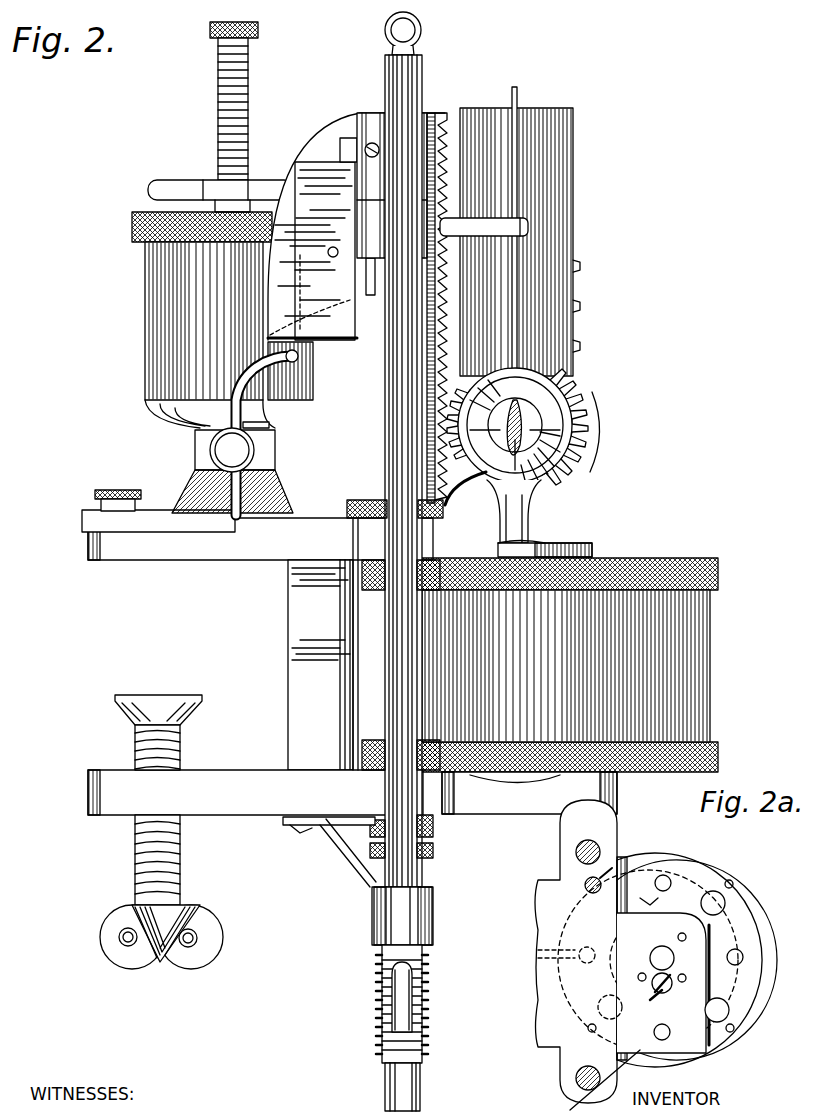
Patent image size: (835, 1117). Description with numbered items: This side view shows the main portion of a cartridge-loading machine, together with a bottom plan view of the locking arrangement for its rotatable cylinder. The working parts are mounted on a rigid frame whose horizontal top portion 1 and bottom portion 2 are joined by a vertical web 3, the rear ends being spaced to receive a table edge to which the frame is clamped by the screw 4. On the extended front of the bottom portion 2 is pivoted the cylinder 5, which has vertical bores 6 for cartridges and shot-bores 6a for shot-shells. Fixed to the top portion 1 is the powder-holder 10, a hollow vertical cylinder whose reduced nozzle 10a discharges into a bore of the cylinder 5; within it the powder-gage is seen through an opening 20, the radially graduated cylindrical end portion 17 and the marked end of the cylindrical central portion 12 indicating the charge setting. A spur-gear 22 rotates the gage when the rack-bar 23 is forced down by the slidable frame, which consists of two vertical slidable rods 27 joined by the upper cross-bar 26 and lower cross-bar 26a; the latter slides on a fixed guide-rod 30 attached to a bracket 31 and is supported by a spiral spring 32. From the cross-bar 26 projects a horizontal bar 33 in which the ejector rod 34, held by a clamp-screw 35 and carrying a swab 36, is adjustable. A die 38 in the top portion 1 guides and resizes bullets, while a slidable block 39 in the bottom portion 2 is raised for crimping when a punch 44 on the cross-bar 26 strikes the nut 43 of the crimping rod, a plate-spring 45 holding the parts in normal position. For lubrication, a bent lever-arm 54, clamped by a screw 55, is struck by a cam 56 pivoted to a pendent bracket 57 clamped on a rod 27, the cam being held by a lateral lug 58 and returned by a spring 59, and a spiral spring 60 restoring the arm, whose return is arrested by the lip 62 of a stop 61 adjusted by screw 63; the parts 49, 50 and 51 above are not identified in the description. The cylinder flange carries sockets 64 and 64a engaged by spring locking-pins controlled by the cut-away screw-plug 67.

In FIG. 2, the horizontal top portion 1 is at (257, 535).
In FIG. 2, the bottom portion 2 is at (255, 792).
In FIG. 2A, the bottom portion 2 is at (545, 975).
In FIG. 2, the vertical web 3 is at (320, 665).
In FIG. 2, the screw 4 is at (135, 733).
In FIG. 2, the cylinder 5 is at (425, 513).
In FIG. 2A, the cylinder 5 is at (762, 960).
In FIG. 2A, the bores 6 is at (740, 956).
In FIG. 2A, the shot-bores 6a is at (720, 1010).
In FIG. 2, the powder-holder 10 is at (574, 282).
In FIG. 2, the reduced nozzle 10a is at (530, 522).
In FIG. 2, the cylindrical central portion 12 is at (465, 500).
In FIG. 2, the cylindrical end portion 17 is at (565, 478).
In FIG. 2, the opening 20 is at (590, 434).
In FIG. 2, the spur-gear 22 is at (432, 420).
In FIG. 2, the rack-bar 23 is at (432, 380).
In FIG. 2, the cross-bar 26 is at (392, 185).
In FIG. 2, the lower cross-bar 26a is at (434, 914).
In FIG. 2, the slidable rods 27 is at (410, 82).
In FIG. 2A, the slidable rods 27 is at (576, 855).
In FIG. 2, the guide-rod 30 is at (410, 1072).
In FIG. 2, the bracket 31 is at (342, 845).
In FIG. 2, the spiral spring 32 is at (400, 1000).
In FIG. 2, the horizontal bar 33 is at (487, 251).
In FIG. 2, the rod 34 is at (518, 94).
In FIG. 2, the clamp-screw 35 is at (530, 232).
In FIG. 2, the swab 36 is at (495, 427).
In FIG. 2, the die 38 is at (376, 500).
In FIG. 2, the slidable block 39 is at (434, 853).
In FIG. 2, the nut 43 is at (377, 629).
In FIG. 2, the punch 44 is at (373, 289).
In FIG. 2, the plate-spring 45 is at (312, 830).
In FIG. 2, the screw 49 is at (218, 96).
In FIG. 2, the screw head 50 is at (258, 30).
In FIG. 2, the handle 51 is at (215, 182).
In FIG. 2, the bent lever-arm 54 is at (258, 378).
In FIG. 2, the screw 55 is at (212, 448).
In FIG. 2, the cam 56 is at (326, 256).
In FIG. 2, the bracket 57 is at (356, 226).
In FIG. 2, the lateral lug 58 is at (311, 371).
In FIG. 2, the spring 59 is at (310, 295).
In FIG. 2, the spiral spring 60 is at (270, 436).
In FIG. 2, the stop 61 is at (152, 534).
In FIG. 2, the lip 62 is at (250, 505).
In FIG. 2, the screw 63 is at (122, 490).
In FIG. 2A, the sockets 64 is at (731, 881).
In FIG. 2A, the sockets 64a is at (684, 932).
In FIG. 2, the screw-plug 67 is at (434, 829).
In FIG. 2A, the screw-plug 67 is at (603, 880).